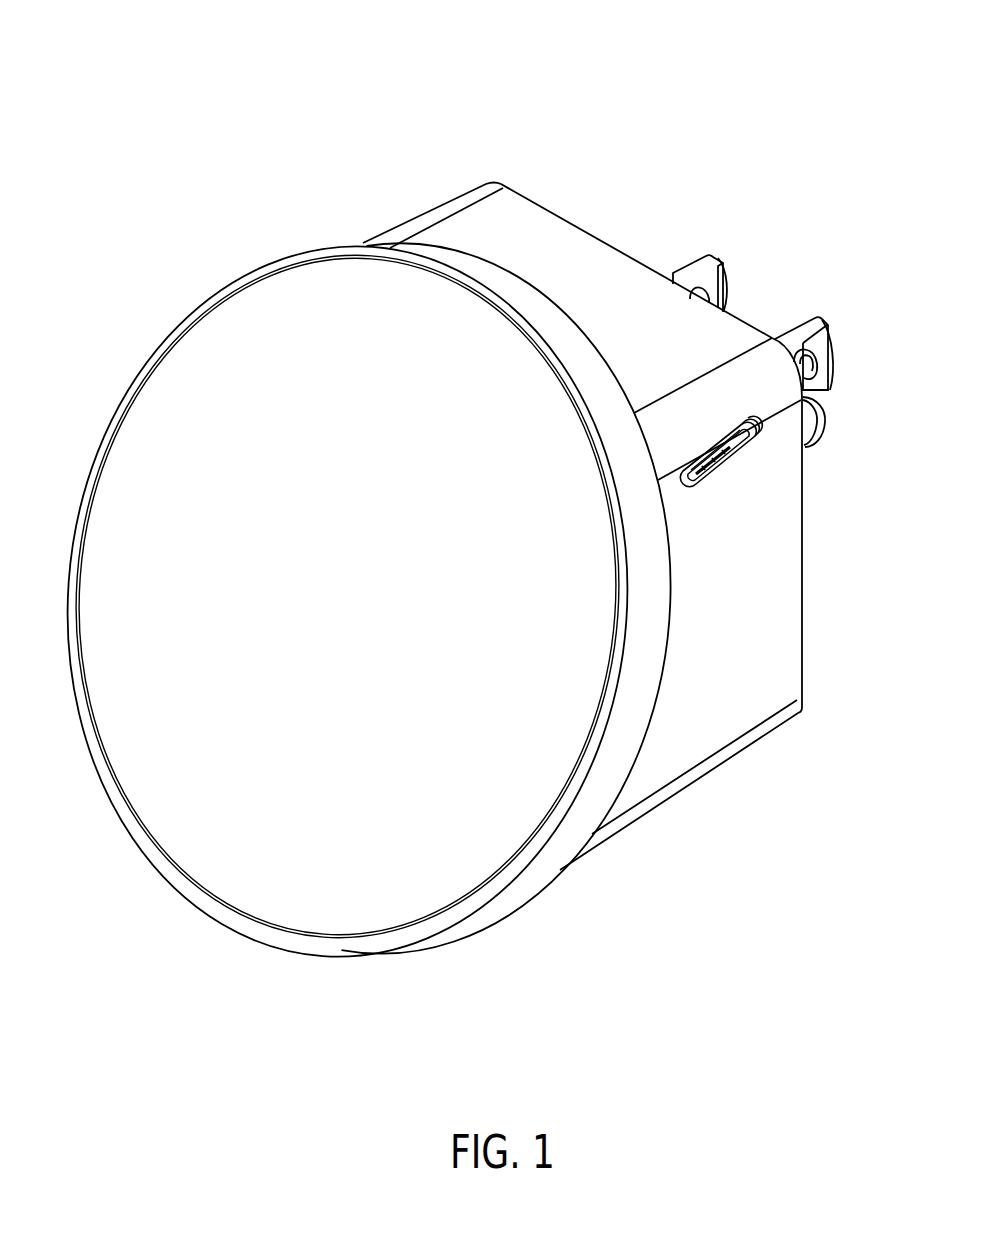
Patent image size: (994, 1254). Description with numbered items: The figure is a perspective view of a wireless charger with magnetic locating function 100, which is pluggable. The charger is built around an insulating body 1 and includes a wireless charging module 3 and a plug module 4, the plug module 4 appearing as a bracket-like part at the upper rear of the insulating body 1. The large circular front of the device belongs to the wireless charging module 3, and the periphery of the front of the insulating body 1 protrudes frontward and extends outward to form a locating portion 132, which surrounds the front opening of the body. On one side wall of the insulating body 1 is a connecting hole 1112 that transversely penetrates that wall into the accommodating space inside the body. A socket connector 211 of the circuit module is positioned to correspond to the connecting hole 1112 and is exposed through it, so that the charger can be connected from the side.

The wireless charger with magnetic locating function 100 is at (96, 33).
The insulating body 1 is at (772, 590).
The wireless charging module 3 is at (148, 443).
The plug module 4 is at (840, 323).
The locating portion 132 is at (541, 886).
The socket connector 211 is at (757, 436).
The connecting hole 1112 is at (700, 473).